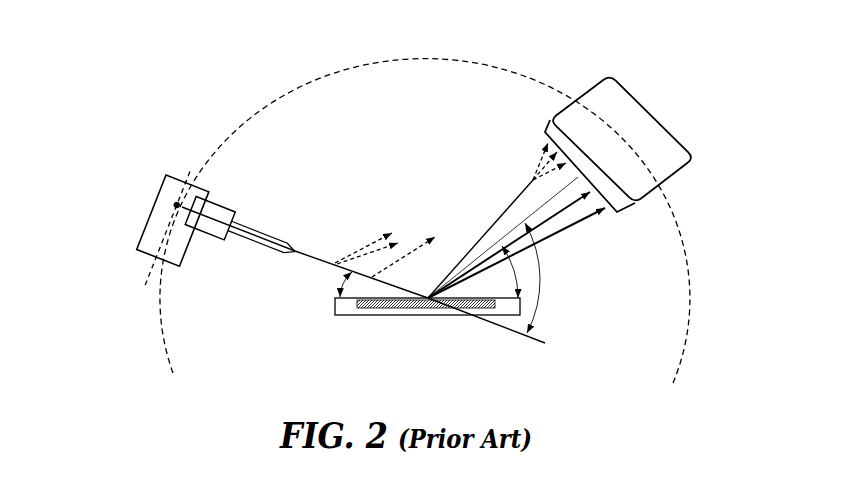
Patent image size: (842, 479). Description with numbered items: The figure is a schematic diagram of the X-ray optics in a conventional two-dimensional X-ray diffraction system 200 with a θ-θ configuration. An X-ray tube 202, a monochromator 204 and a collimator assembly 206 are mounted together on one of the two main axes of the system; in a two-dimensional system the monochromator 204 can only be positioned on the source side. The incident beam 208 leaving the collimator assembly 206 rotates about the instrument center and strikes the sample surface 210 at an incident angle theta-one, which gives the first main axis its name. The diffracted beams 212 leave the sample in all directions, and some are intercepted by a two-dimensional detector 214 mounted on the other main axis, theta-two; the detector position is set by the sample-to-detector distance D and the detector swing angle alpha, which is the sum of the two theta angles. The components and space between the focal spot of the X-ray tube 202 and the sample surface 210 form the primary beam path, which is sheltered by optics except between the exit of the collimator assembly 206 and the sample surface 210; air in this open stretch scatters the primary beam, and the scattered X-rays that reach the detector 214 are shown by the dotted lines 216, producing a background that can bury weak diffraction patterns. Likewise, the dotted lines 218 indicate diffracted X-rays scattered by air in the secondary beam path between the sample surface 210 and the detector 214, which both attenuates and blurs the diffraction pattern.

The two-dimensional system 200 is at (176, 86).
The X-ray tube 202 is at (138, 222).
The monochromator 204 is at (209, 232).
The collimator assembly 206 is at (270, 244).
The incident beam 208 is at (308, 256).
The sample surface 210 is at (427, 337).
The diffracted beams 212 is at (579, 244).
The two dimensional detector 214 is at (633, 145).
The dotted lines indicating air-scattered primary beam X-rays 216 is at (403, 205).
The dotted lines indicating air-scattered diffracted X-rays 218 is at (463, 110).